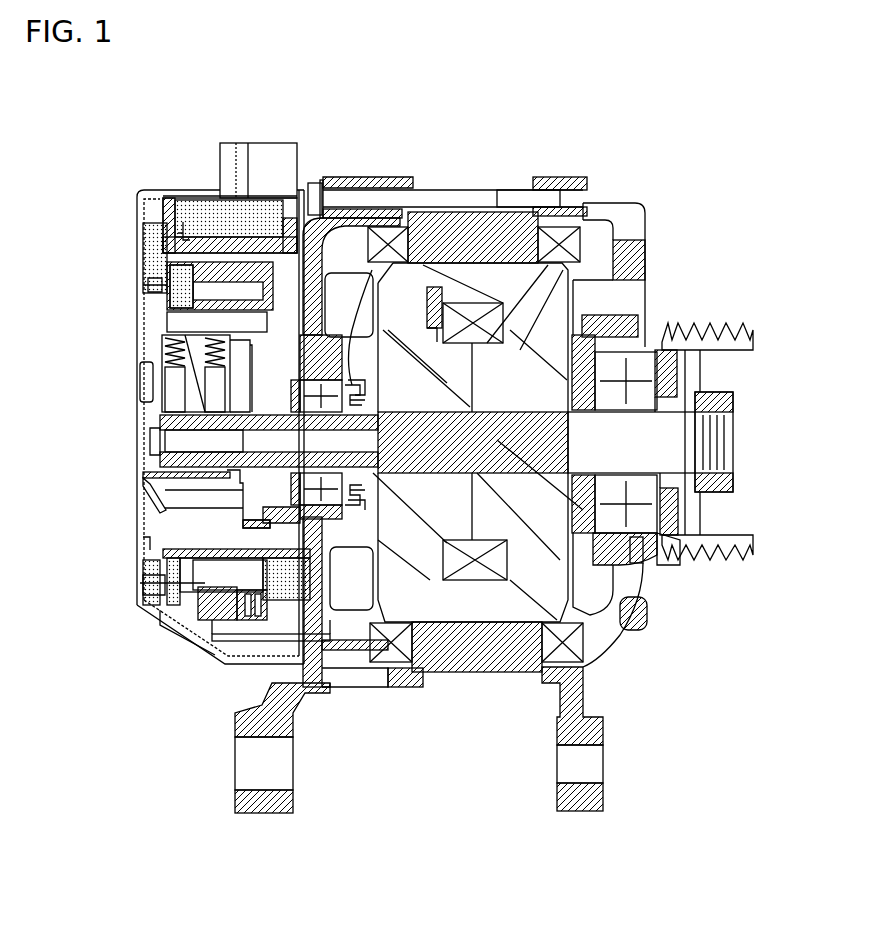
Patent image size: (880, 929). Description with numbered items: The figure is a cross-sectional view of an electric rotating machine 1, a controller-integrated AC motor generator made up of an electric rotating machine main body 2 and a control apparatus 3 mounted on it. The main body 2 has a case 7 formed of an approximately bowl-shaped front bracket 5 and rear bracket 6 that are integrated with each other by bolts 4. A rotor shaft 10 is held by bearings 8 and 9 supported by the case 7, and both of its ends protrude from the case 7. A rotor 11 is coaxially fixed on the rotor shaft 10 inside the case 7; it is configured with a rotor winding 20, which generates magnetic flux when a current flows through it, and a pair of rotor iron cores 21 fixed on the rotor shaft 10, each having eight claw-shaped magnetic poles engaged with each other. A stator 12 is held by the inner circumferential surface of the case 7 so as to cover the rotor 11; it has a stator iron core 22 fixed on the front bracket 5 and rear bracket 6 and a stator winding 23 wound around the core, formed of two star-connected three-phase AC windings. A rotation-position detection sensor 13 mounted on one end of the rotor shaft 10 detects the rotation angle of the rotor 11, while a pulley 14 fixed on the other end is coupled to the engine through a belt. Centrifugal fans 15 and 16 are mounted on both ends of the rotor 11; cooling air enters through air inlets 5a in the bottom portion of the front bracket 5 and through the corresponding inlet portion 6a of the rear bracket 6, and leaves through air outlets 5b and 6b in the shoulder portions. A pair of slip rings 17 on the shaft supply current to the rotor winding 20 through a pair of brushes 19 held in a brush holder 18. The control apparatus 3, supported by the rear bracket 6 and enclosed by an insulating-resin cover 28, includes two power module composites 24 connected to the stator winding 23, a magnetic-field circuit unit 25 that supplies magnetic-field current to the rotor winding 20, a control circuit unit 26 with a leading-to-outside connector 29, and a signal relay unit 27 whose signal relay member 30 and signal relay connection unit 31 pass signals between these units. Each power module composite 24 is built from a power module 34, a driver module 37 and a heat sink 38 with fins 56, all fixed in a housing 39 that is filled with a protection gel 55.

The electric rotating machine 1 is at (647, 142).
The electric rotating machine main body 2 is at (367, 157).
The control apparatus 3 is at (167, 167).
The bolts 4 is at (532, 203).
The front bracket 5 is at (537, 177).
The air inlets 5a is at (640, 290).
The air outlets 5b is at (607, 210).
The rear bracket 6 is at (400, 177).
The rear housing wall 6a is at (300, 322).
The air outlets 6b is at (340, 677).
The case 7 is at (480, 125).
The bearing 8 is at (640, 388).
The bearing 9 is at (352, 505).
The rotor shaft 10 is at (603, 537).
The rotor 11 is at (555, 528).
The stator 12 is at (475, 507).
The rotation-position detection sensor 13 is at (300, 500).
The pulley 14 is at (707, 320).
The centrifugal fan 15 is at (593, 290).
The centrifugal fan 16 is at (348, 300).
The slip rings 17 is at (162, 445).
The brush holder 18 is at (175, 348).
The brushes 19 is at (215, 388).
The rotor winding 20 is at (495, 600).
The rotor iron cores 21 is at (520, 600).
The stator iron core 22 is at (435, 662).
The stator winding 23 is at (380, 657).
The power module composite 24 is at (177, 603).
The magnetic-field circuit unit 25 is at (168, 312).
The control circuit unit 26 is at (165, 208).
The signal relay unit 27 is at (143, 258).
The cover 28 is at (203, 190).
The leading-to-outside connector 29 is at (248, 143).
The signal relay member 30 is at (150, 284).
The signal relay connection unit 31 is at (183, 238).
The power module 34 is at (247, 602).
The driver module 37 is at (213, 612).
The heat sink 38 is at (188, 540).
The housing 39 is at (157, 633).
The protection gel 55 is at (277, 603).
The fins 56 is at (197, 517).